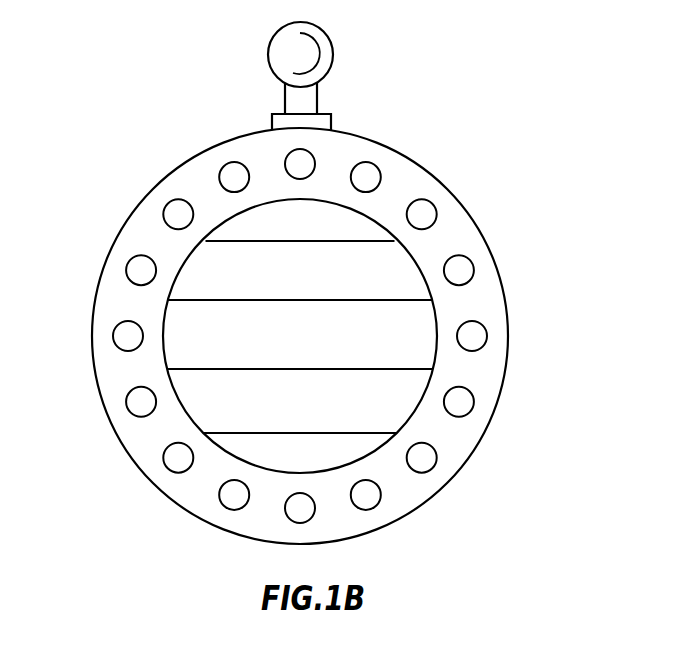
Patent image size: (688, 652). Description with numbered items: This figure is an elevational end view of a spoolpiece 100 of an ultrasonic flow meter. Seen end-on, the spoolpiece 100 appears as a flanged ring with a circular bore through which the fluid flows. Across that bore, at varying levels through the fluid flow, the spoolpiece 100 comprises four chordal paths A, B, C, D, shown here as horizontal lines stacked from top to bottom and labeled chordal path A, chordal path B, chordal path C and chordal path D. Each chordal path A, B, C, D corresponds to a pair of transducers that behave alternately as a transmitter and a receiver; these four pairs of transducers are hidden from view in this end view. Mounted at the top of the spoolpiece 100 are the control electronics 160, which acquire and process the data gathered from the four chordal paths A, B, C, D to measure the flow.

The spoolpiece 100 is at (336, 336).
The control electronics 160 is at (334, 57).
The chordal path A is at (300, 225).
The chordal path B is at (300, 286).
The chordal path C is at (300, 355).
The chordal path D is at (300, 420).